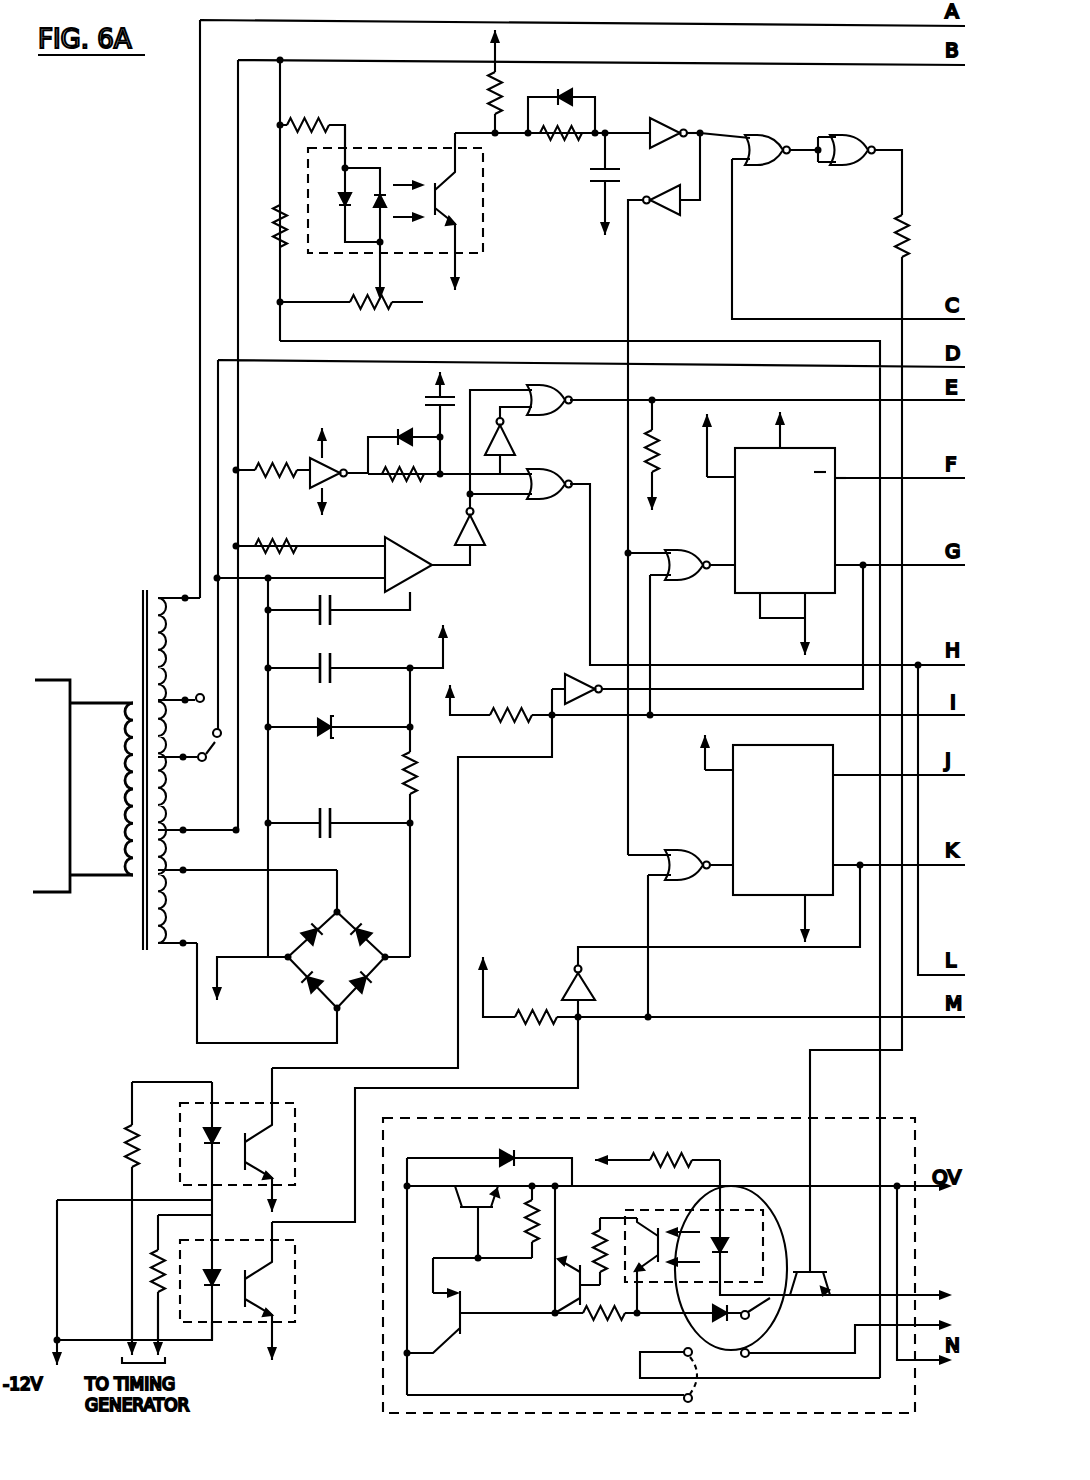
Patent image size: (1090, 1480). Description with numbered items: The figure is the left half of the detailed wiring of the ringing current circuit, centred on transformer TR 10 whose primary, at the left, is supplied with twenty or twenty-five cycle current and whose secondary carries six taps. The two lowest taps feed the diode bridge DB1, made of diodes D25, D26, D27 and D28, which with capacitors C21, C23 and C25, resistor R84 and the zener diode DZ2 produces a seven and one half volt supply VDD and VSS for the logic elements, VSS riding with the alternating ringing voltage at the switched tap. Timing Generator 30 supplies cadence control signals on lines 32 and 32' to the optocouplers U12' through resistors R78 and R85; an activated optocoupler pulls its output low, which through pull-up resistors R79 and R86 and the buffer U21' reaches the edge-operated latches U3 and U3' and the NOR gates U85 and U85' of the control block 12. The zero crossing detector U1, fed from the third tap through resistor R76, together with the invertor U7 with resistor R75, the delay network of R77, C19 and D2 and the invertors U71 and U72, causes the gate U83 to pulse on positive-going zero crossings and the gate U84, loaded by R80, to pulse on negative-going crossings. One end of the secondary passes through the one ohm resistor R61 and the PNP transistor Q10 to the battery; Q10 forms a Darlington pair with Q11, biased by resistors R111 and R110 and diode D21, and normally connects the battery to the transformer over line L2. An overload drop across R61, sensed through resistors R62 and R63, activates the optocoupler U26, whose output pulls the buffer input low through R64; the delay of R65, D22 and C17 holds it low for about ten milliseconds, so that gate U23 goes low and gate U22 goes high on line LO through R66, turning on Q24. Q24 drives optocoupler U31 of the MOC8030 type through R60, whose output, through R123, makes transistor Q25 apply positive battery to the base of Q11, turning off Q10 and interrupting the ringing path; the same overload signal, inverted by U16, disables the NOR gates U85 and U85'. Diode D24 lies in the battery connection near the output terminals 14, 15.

The transformer TR 10 is at (128, 600).
The Timing Generator 30 is at (165, 1363).
The cadence control line 32 is at (113, 1320).
The cadence control line 32' is at (179, 1320).
The control block 12 is at (564, 1404).
The relay contact 14 is at (760, 1361).
The relay contact 15 is at (846, 1340).
The line L2 is at (878, 500).
The line LO is at (902, 300).
The one ohm resistor R61 is at (263, 237).
The resistor R62 is at (316, 135).
The resistor R63 is at (350, 313).
The resistor R64 is at (493, 83).
The resistor R65 is at (566, 144).
The resistor R66 is at (876, 743).
The diode D22 is at (572, 102).
The capacitor C17 is at (575, 198).
The invertor U16 is at (661, 510).
The NOR gate U23 is at (777, 148).
The NOR gate U22 is at (860, 162).
The optocoupler U26 is at (395, 221).
The capacitor C19 is at (406, 423).
The diode D2 is at (404, 444).
The resistor R77 is at (409, 484).
The resistor R75 is at (266, 471).
The invertor U7 is at (324, 474).
The resistor R76 is at (265, 547).
The zero crossing detector U1 is at (400, 563).
The invertor U71 is at (492, 484).
The invertor U72 is at (513, 444).
The NOR gate U84 is at (736, 396).
The NOR gate U83 is at (738, 563).
The resistor R80 is at (673, 468).
The NOR gate U85 is at (680, 625).
The latch CD4013 U3 is at (833, 538).
The resistor R79 is at (705, 694).
The capacitor C21 is at (342, 615).
The capacitor C23 is at (371, 643).
The zener diode DZ2 is at (339, 721).
The resistor R84 is at (390, 776).
The capacitor C25 is at (339, 818).
The diode bridge DB1 is at (304, 956).
The diode D25 is at (376, 917).
The diode D26 is at (300, 917).
The diode D27 is at (307, 1005).
The diode D28 is at (380, 999).
The latch U3' is at (832, 841).
The NOR gate U85' is at (680, 926).
The buffer U21' is at (711, 943).
The resistor R86 is at (618, 1078).
The resistor R78 is at (150, 1218).
The resistor R85 is at (150, 1285).
The optocoupler MOC8030 U12' is at (260, 1231).
The diode D21 is at (488, 1264).
The transistor Q10 is at (455, 1222).
The resistor R111 is at (486, 1238).
The transistor Q11 is at (480, 1326).
The transistor Q25 is at (540, 1250).
The resistor R123 is at (597, 1249).
The resistor R110 is at (630, 1313).
The optocoupler MOC8030 is at (690, 1247).
The output transistor U31 is at (735, 1255).
The resistor R60 is at (657, 1150).
The diode D24 is at (737, 1323).
The transistor Q24 is at (839, 1287).